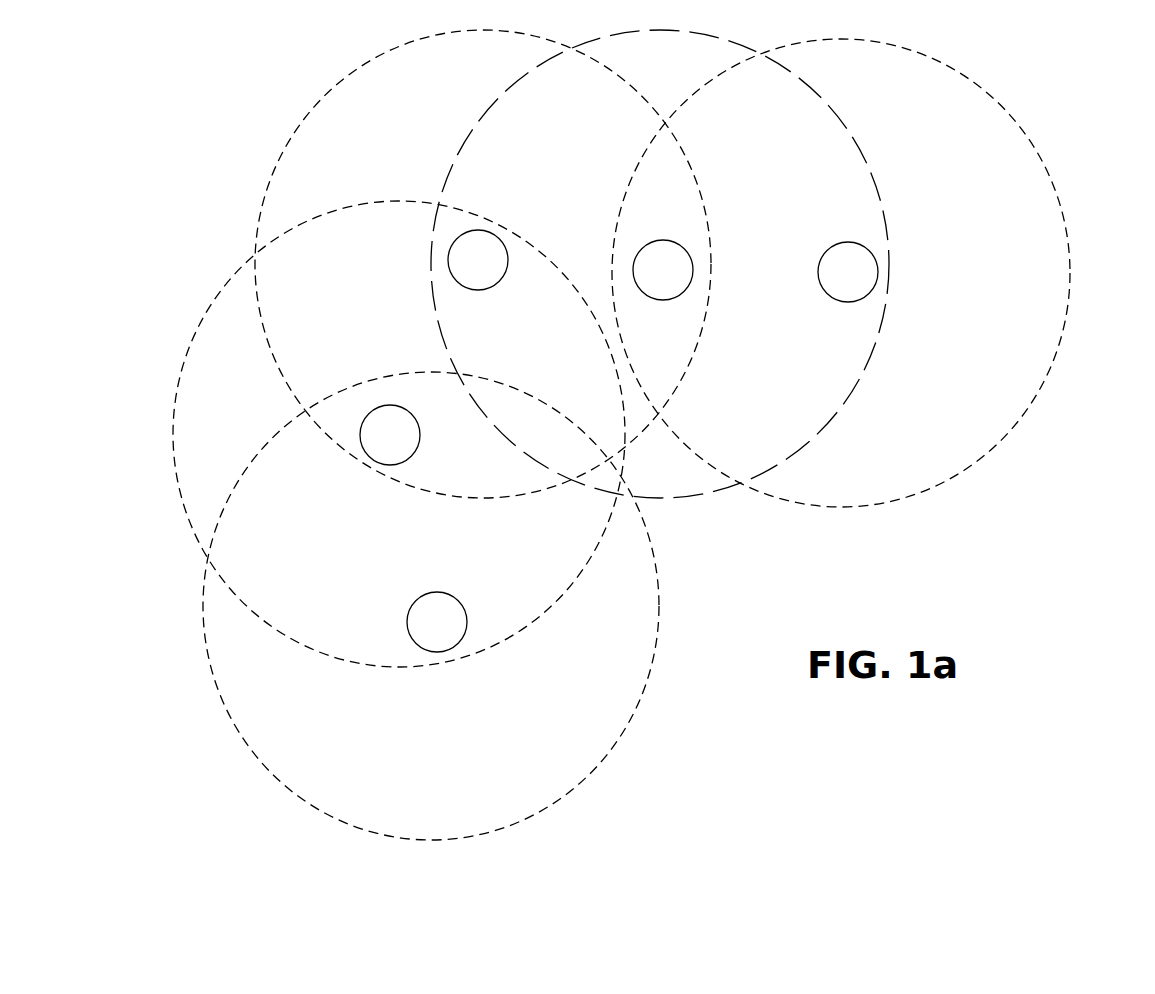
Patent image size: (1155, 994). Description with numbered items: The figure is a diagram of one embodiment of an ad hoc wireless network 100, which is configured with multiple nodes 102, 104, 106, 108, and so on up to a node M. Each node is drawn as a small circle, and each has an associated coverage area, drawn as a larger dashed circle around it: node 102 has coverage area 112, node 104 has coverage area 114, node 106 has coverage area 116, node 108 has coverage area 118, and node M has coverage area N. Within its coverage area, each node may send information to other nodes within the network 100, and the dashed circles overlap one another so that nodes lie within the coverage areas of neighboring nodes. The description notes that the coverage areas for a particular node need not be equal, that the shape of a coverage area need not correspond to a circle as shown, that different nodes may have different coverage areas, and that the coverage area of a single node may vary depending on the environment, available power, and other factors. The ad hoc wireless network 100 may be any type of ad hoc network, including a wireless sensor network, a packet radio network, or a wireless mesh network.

The ad hoc wireless network 100 is at (1034, 86).
The node 102 is at (478, 291).
The node 104 is at (668, 240).
The node 106 is at (846, 243).
The node 108 is at (418, 449).
The coverage area 112 is at (298, 128).
The coverage area 114 is at (678, 498).
The coverage area 116 is at (1043, 160).
The coverage area 118 is at (189, 348).
The node M is at (408, 618).
The coverage area N is at (660, 600).